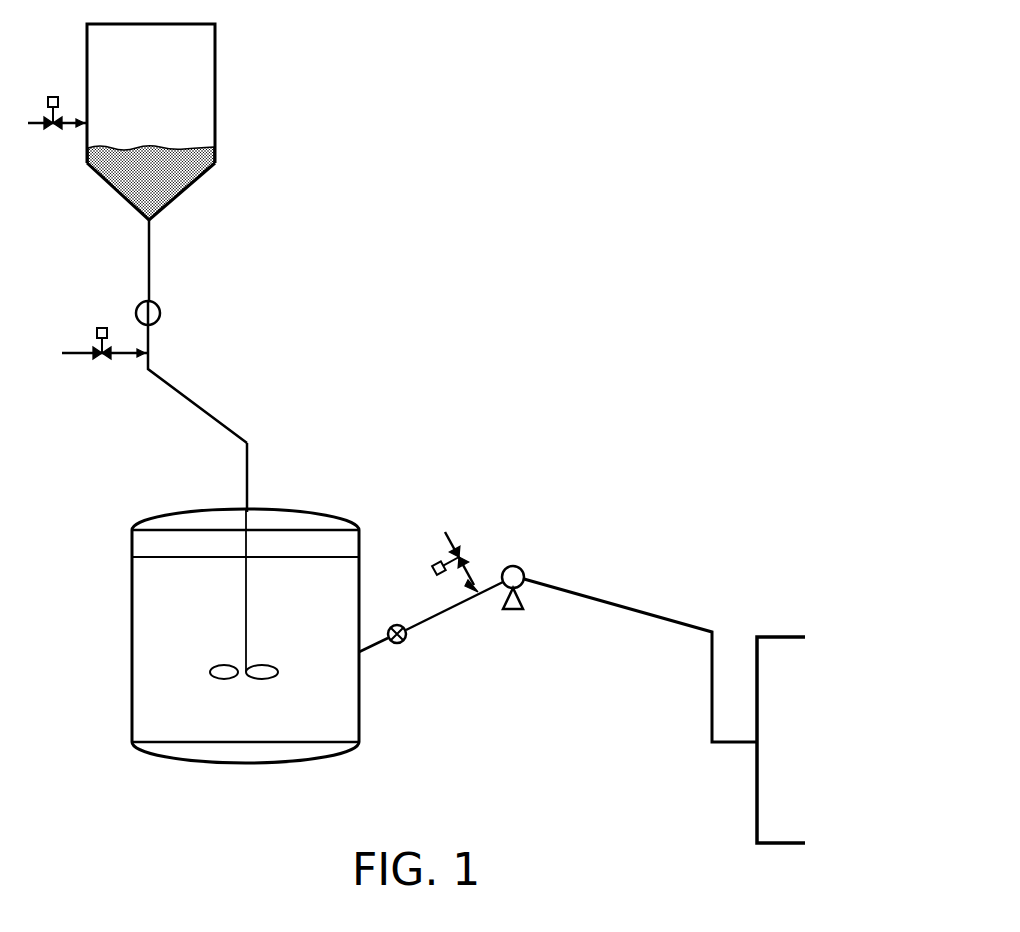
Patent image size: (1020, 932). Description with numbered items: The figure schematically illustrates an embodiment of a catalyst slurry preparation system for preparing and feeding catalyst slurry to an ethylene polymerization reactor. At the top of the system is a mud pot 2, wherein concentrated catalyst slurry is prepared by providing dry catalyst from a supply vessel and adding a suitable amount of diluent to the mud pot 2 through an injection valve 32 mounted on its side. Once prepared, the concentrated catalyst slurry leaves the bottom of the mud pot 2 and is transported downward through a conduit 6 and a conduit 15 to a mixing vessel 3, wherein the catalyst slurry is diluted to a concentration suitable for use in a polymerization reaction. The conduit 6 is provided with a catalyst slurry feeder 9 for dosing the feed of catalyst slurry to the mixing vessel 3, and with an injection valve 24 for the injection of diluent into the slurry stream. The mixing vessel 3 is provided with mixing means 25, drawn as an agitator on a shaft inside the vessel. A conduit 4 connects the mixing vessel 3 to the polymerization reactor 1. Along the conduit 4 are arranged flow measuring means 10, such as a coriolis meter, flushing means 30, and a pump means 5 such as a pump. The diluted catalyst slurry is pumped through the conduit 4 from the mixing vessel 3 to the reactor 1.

The polymerization reactor 1 is at (795, 730).
The mud pot 2 is at (156, 86).
The mixing vessel 3 is at (186, 606).
The conduit 4 is at (370, 654).
The pump means 5 is at (515, 611).
The conduit 6 is at (184, 396).
The catalyst slurry feeder 9 is at (160, 313).
The flow measuring means 10 is at (389, 627).
The conduit 15 is at (249, 482).
The injection valve 24 is at (76, 355).
The mixing means 25 is at (262, 680).
The flushing means 30 is at (447, 533).
The injection valve 32 is at (68, 124).